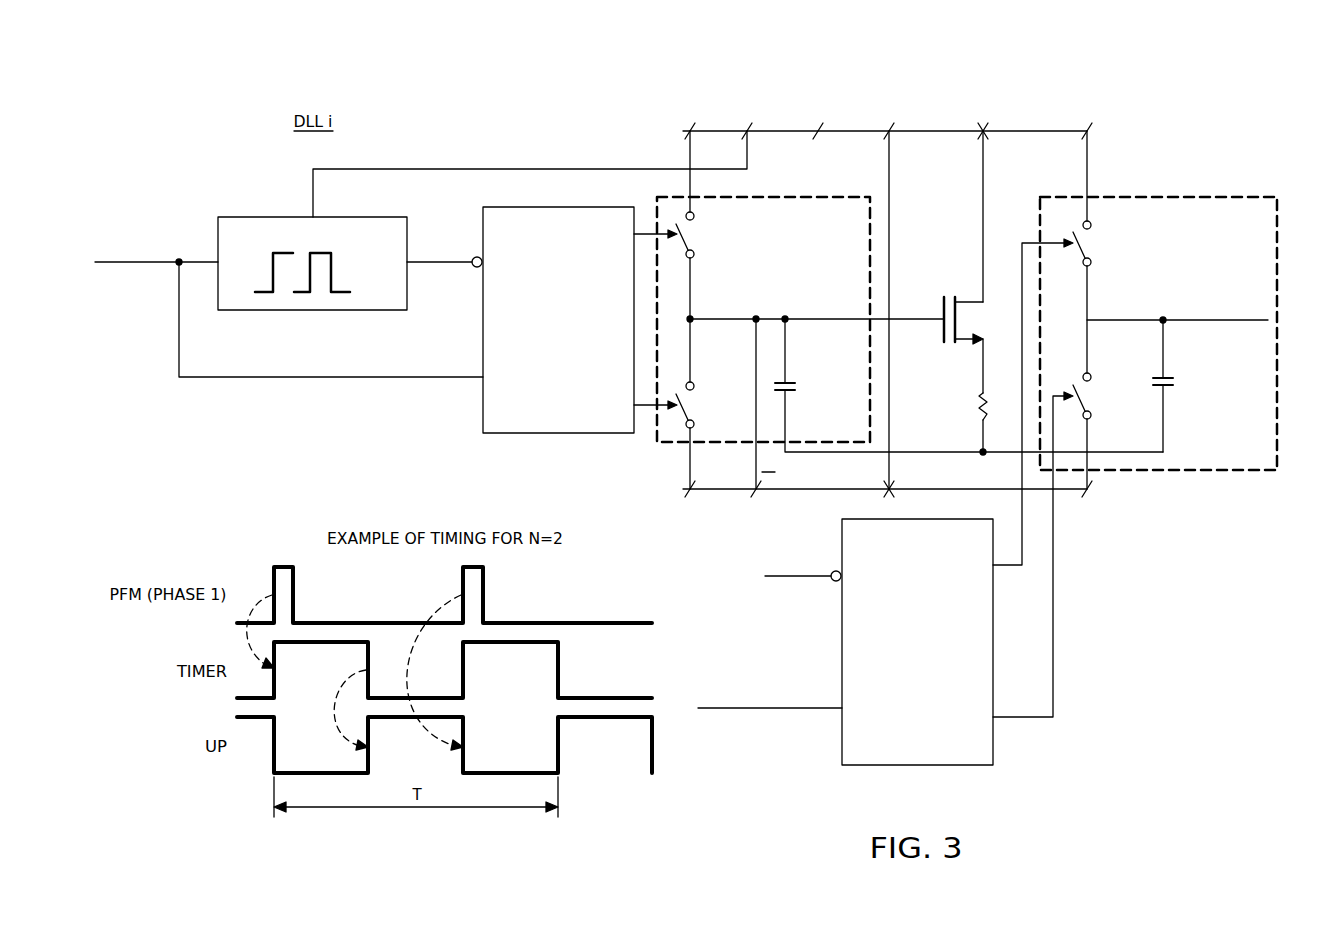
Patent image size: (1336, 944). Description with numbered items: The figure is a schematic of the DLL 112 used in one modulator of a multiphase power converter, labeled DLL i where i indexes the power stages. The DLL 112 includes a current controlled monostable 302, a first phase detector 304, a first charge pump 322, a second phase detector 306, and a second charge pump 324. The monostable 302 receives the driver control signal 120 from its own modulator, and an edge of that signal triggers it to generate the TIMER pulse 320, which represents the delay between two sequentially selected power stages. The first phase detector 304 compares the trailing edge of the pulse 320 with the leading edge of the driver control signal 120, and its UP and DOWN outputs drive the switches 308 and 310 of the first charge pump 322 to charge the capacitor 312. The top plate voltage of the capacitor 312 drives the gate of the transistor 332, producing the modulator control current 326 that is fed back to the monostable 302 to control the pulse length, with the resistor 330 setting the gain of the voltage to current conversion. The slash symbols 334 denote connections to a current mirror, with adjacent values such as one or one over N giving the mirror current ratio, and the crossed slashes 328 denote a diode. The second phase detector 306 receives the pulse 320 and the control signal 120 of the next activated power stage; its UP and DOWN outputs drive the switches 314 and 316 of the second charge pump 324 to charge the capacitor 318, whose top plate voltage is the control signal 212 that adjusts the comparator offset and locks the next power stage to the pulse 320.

The DLL 112 is at (1174, 742).
The driver control signal 120 is at (146, 267).
The control signal 212 is at (1213, 322).
The current controlled monostable 302 is at (283, 215).
The first phase detector 304 is at (557, 435).
The second phase detector 306 is at (918, 767).
The switch 308 is at (697, 240).
The switch 310 is at (697, 410).
The capacitor 312 is at (796, 385).
The switch 314 is at (1094, 248).
The switch 316 is at (1094, 404).
The capacitor 318 is at (1175, 384).
The pulse 320 is at (446, 268).
The first charge pump 322 is at (780, 190).
The second charge pump 324 is at (1186, 190).
The modulator control current 326 is at (530, 167).
The crossed slashes 328 is at (985, 124).
The resistor 330 is at (978, 406).
The transistor 332 is at (935, 298).
The slash symbols 334 is at (691, 125).